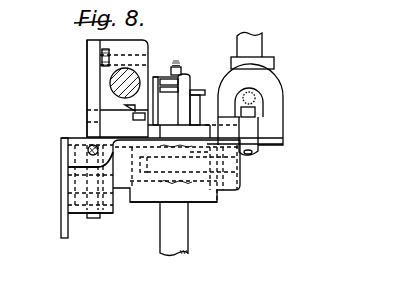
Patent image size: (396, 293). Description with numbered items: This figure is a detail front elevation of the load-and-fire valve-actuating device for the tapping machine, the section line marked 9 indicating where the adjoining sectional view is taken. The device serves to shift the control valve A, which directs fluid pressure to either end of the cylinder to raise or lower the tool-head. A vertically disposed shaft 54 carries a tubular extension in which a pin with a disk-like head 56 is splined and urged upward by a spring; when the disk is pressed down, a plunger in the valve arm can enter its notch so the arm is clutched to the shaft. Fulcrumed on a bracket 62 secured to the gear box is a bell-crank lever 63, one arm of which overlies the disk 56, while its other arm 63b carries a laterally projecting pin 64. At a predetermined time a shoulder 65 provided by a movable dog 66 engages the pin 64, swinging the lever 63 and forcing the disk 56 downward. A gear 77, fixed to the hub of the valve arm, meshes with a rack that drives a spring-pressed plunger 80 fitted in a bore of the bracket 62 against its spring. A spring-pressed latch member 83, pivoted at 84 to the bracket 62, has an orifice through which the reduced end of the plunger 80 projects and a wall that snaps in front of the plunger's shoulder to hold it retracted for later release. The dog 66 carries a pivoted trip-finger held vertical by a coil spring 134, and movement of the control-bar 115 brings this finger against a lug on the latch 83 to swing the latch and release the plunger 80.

The control-bar 115 is at (109, 88).
The coil spring 134 is at (110, 52).
The shoulder 65 is at (128, 110).
The pin 64 is at (137, 120).
The bell-crank lever 63 is at (88, 127).
The arm of the bell-crank lever 63b is at (165, 101).
The movable dog 66 is at (150, 79).
The bracket 62 is at (186, 92).
The disk-like head 56 is at (203, 91).
The control valve A is at (328, 96).
The shaft 54 is at (174, 229).
The spring-pressed plunger 80 is at (137, 202).
The gear 77 is at (212, 202).
The pivot 84 is at (95, 218).
The latch member 83 is at (100, 200).
The shaft 9 is at (18, 152).